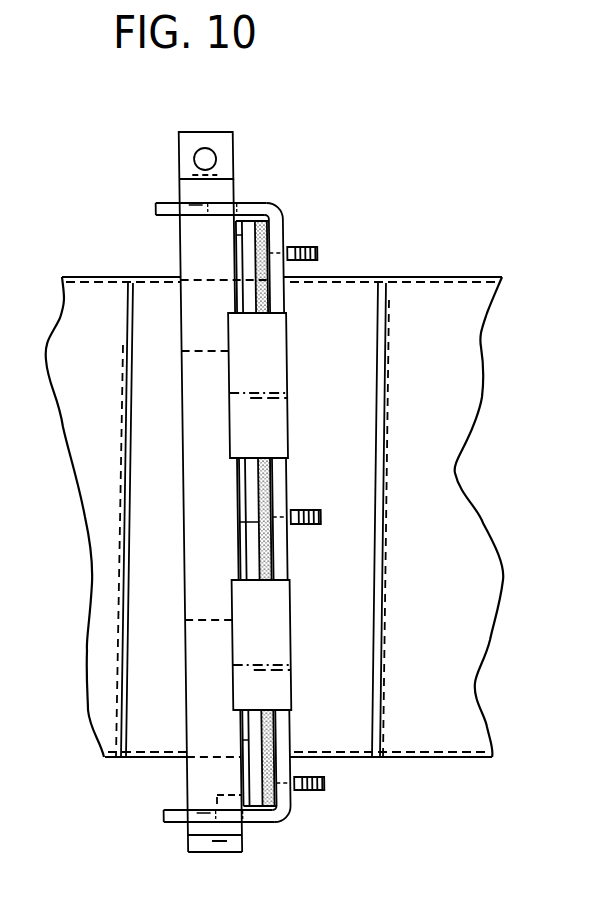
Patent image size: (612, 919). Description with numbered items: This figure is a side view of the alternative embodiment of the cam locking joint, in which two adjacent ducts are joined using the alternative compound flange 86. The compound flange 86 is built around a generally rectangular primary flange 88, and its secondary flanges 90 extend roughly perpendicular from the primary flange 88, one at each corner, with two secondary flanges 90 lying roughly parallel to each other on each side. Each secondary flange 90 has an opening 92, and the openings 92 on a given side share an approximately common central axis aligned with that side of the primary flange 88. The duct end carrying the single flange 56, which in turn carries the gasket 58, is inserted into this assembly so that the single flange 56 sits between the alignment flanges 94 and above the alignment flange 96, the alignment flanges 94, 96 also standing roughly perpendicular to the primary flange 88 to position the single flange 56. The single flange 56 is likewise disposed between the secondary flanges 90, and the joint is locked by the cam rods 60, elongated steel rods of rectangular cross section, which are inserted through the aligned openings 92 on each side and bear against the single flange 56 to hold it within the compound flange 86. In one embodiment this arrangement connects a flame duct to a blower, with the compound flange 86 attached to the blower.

The single flange 56 is at (246, 493).
The gasket 58 is at (264, 547).
The cam rod 60 is at (233, 157).
The compound flange 86 is at (279, 200).
The primary flange 88 is at (278, 472).
The secondary flange 90 is at (165, 202).
The opening 92 is at (193, 215).
The alignment flange 94 is at (270, 358).
The alignment flange 96 is at (230, 803).